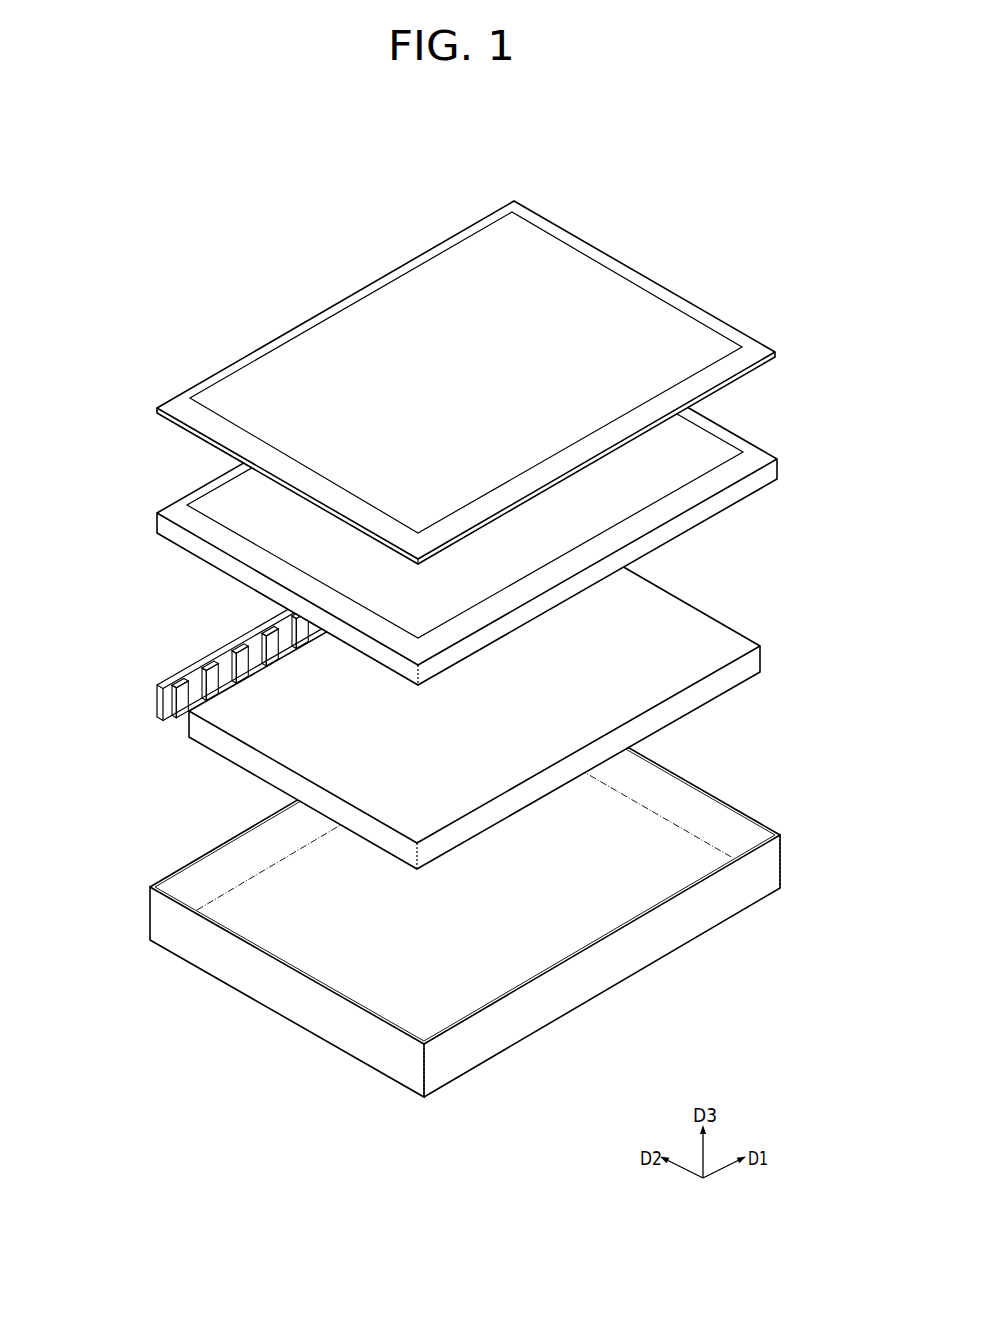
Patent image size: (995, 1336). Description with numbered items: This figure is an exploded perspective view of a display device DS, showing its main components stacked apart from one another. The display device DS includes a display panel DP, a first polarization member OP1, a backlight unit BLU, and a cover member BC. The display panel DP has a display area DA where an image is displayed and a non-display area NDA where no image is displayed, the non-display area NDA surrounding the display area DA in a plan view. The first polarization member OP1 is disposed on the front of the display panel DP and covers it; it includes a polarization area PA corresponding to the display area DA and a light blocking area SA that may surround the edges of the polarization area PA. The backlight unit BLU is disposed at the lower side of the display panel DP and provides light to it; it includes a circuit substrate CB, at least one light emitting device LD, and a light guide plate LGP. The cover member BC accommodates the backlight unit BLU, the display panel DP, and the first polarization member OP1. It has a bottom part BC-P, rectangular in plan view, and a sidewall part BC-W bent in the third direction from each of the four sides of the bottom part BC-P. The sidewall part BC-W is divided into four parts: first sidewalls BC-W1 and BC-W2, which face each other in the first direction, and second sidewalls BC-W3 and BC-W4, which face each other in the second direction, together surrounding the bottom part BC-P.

The display device DS is at (453, 611).
The first polarization member OP1 is at (466, 365).
The polarization area PA is at (653, 210).
The light blocking area SA is at (608, 262).
The display panel DP is at (515, 496).
The display area DA is at (703, 442).
The non-display area NDA is at (755, 453).
The backlight unit BLU is at (396, 678).
The light emitting device LD is at (177, 687).
The circuit substrate CB is at (157, 703).
The light guide plate LGP is at (193, 733).
The cover member BC is at (458, 887).
The sidewall part BC-W is at (458, 887).
The bottom part BC-P is at (368, 987).
The first sidewall BC-W1 is at (157, 912).
The first sidewall BC-W2 is at (728, 822).
The second sidewall BC-W3 is at (192, 880).
The second sidewall BC-W4 is at (568, 994).